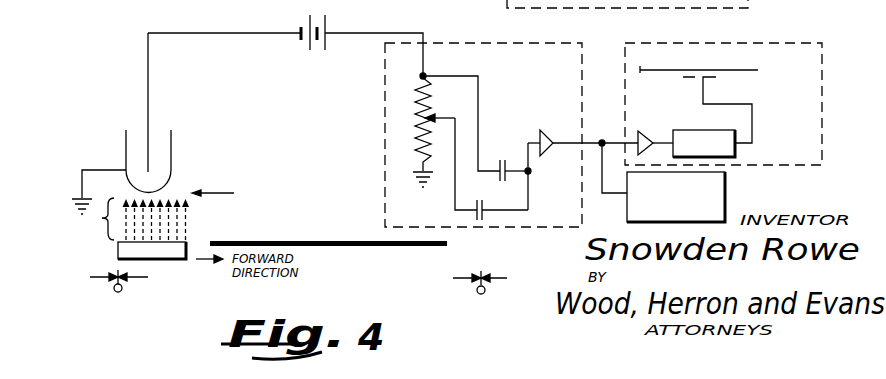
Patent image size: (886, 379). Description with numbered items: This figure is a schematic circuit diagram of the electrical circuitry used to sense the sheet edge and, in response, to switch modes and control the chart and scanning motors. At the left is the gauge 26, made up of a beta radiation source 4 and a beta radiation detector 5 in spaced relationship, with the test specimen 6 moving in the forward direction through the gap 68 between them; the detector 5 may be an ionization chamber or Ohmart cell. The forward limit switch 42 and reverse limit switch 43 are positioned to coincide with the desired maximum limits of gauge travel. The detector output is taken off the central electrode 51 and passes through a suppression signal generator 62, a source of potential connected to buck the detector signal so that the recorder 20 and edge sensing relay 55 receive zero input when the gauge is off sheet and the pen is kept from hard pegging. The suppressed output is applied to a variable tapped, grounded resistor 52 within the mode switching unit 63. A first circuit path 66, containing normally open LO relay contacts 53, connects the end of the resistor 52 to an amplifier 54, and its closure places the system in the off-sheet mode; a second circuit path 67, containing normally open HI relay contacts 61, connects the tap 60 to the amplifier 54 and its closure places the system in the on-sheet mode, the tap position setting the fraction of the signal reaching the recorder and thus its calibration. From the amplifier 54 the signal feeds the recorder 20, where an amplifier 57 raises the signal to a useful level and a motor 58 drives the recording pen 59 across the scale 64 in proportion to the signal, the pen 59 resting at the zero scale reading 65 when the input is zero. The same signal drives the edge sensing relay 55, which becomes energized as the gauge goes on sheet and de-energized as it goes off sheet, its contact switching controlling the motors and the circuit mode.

The beta radiation source 4 is at (178, 260).
The beta radiation detector 5 is at (171, 160).
The test specimen 6 is at (327, 240).
The recorder 20 is at (822, 82).
The gauge 26 is at (232, 193).
The forward limit switch 42 is at (481, 294).
The reverse limit switch 43 is at (119, 292).
The central electrode 51 is at (148, 90).
The variable tapped grounded resistor 52 is at (420, 136).
The LO relay contacts 53 is at (513, 160).
The amplifier 54 is at (543, 130).
The edge sensing relay 55 is at (727, 181).
The amplifier 57 is at (643, 134).
The motor 58 is at (737, 148).
The recording pen 59 is at (716, 80).
The tap 60 is at (430, 116).
The HI relay contacts 61 is at (485, 218).
The suppression signal generator 62 is at (327, 37).
The mode switching unit 63 is at (478, 30).
The scale 64 is at (708, 69).
The zero scale reading 65 is at (644, 67).
The first circuit path 66 is at (480, 108).
The second circuit path 67 is at (455, 190).
The gap 68 is at (100, 222).